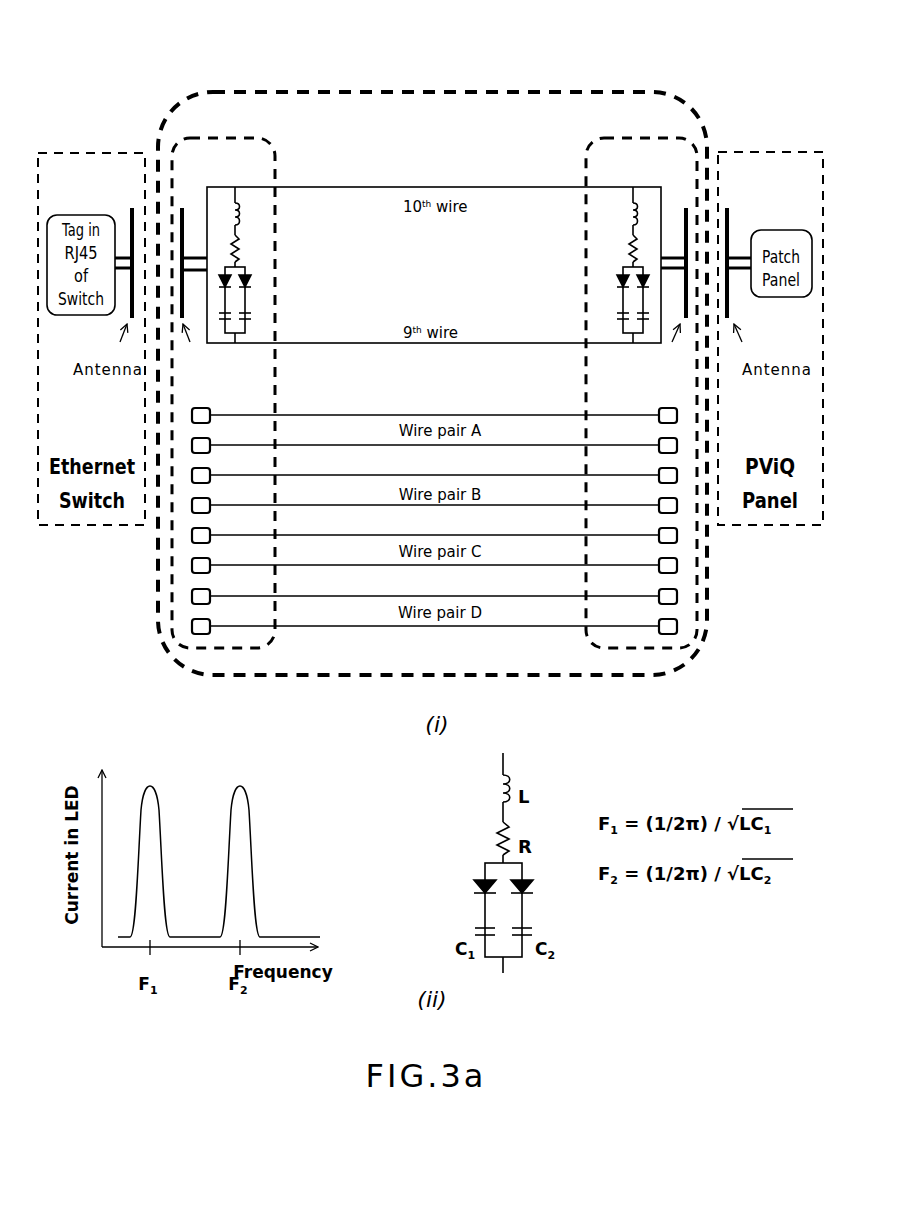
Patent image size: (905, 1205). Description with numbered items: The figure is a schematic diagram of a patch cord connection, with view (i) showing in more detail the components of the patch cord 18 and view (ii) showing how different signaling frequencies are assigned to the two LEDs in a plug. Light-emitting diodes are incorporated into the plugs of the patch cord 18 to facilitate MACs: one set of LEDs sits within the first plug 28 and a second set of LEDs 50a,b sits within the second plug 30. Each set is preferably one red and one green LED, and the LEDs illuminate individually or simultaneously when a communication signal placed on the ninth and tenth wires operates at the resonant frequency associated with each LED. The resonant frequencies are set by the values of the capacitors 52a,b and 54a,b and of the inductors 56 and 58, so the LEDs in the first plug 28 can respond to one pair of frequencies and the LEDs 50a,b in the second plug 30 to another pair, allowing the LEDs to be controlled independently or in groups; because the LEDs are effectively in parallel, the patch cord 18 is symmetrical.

The patch cord 18 is at (391, 82).
The first plug 28 is at (222, 137).
The second plug 30 is at (621, 137).
The inductor 56 is at (245, 212).
The inductor 58 is at (624, 212).
The LEDs 50a,b is at (620, 281).
The capacitors 52a,b is at (258, 319).
The capacitors 54a,b is at (620, 321).